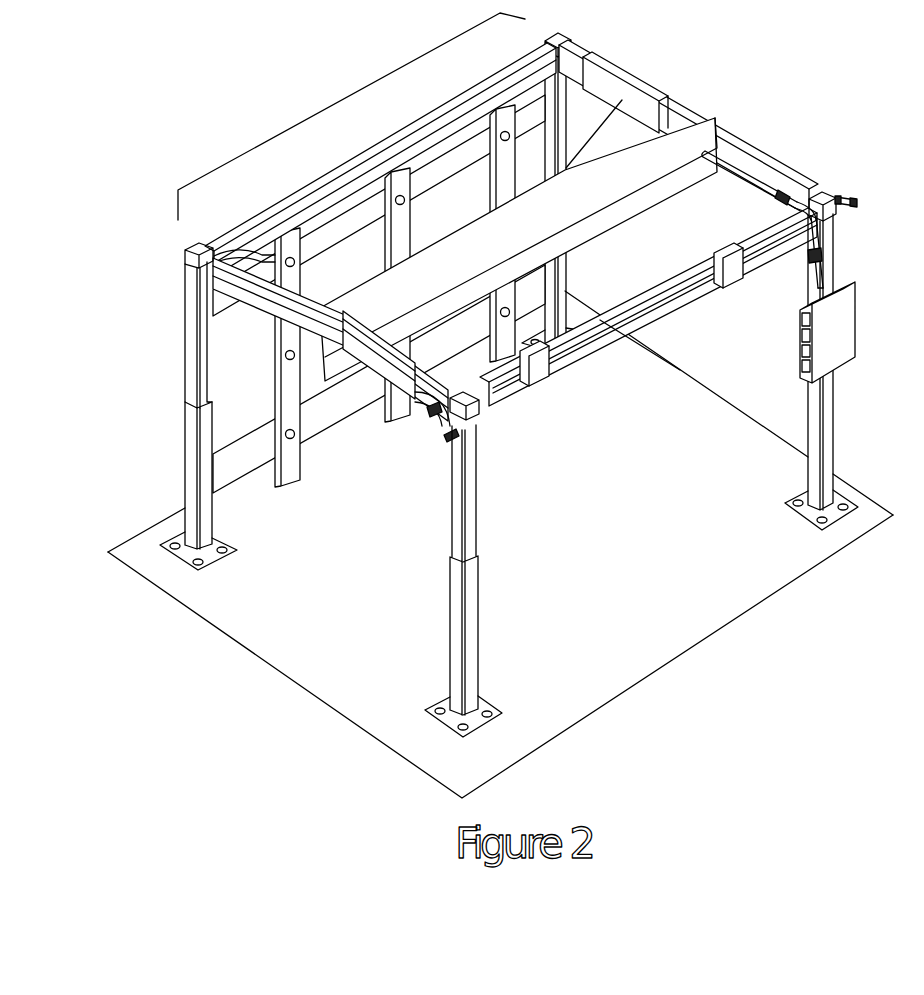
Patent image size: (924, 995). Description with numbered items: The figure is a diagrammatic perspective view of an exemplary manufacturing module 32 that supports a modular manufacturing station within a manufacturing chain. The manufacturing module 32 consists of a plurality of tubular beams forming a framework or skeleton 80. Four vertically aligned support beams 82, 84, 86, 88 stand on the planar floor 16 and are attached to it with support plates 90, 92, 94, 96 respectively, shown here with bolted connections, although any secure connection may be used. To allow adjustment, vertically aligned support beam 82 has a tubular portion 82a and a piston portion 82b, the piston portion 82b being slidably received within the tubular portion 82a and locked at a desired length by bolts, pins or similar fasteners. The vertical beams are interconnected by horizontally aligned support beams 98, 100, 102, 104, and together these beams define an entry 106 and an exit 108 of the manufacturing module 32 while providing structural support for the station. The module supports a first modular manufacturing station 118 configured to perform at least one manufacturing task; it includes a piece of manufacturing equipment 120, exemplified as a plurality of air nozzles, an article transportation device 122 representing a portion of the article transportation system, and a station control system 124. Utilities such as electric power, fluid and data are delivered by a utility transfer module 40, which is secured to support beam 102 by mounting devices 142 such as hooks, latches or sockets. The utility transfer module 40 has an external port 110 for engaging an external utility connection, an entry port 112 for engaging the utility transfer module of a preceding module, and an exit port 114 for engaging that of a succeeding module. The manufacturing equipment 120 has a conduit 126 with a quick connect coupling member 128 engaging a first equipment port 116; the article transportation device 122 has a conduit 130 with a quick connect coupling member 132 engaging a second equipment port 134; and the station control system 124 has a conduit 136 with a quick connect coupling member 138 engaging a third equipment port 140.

The planar floor 16 is at (276, 653).
The manufacturing module 32 is at (774, 59).
The utility transfer module 40 is at (633, 328).
The skeleton 80 is at (169, 382).
The vertically aligned support beam 82 is at (173, 396).
The tubular portion 82a is at (184, 455).
The piston portion 82b is at (184, 314).
The vertically aligned support beam 84 is at (452, 527).
The vertically aligned support beam 86 is at (565, 118).
The vertically aligned support beam 88 is at (830, 422).
The support plate 90 is at (165, 546).
The support plate 92 is at (432, 709).
The support plate 94 is at (606, 322).
The support plate 96 is at (790, 501).
The horizontally aligned support beam 98 is at (298, 190).
The horizontally aligned support beam 100 is at (228, 256).
The horizontally aligned support beam 102 is at (640, 303).
The horizontally aligned support beam 104 is at (748, 152).
The entry 106 is at (809, 192).
The exit 108 is at (346, 532).
The external port 110 is at (838, 197).
The entry port 112 is at (855, 203).
The exit port 114 is at (448, 438).
The first equipment port 116 is at (433, 417).
The first modular manufacturing station 118 is at (348, 96).
The manufacturing equipment 120 is at (413, 170).
The article transportation device 122 is at (685, 116).
The station control system 124 is at (855, 320).
The conduit 126 is at (266, 313).
The quick connect coupling member 128 is at (422, 410).
The conduit 130 is at (756, 178).
The quick connect coupling member 132 is at (782, 195).
The second equipment port 134 is at (794, 190).
The conduit 136 is at (818, 285).
The quick connect coupling member 138 is at (818, 258).
The third equipment port 140 is at (832, 256).
The mounting device 142 is at (537, 392).